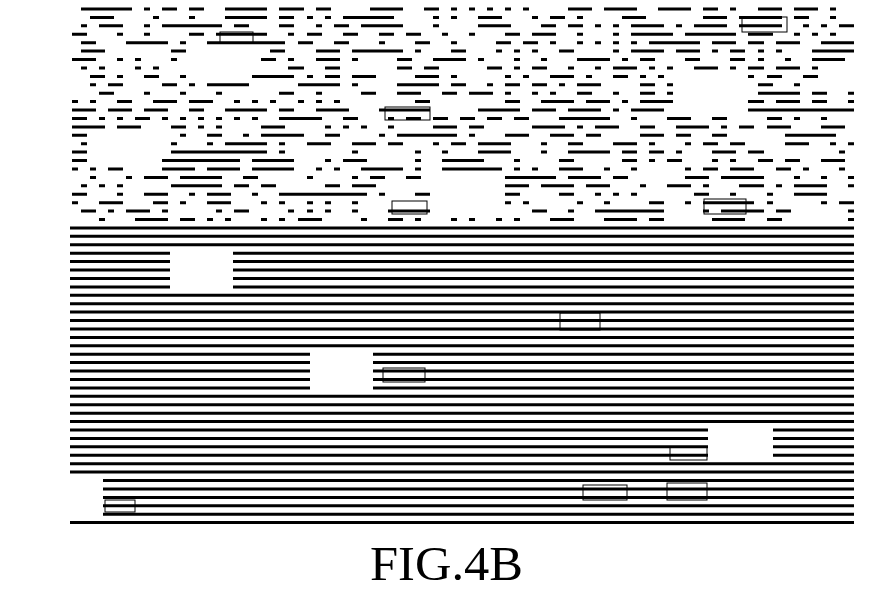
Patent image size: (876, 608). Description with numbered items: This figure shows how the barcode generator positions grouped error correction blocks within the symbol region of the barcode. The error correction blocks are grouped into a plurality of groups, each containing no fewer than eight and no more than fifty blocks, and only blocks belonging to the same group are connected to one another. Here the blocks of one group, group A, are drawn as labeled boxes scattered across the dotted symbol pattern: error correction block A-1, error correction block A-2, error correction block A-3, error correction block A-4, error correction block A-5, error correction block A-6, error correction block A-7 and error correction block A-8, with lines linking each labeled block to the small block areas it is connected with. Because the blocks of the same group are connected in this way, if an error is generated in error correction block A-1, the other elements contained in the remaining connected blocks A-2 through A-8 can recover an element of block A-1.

The error correction block A-1 is at (679, 102).
The error correction block A-2 is at (430, 110).
The error correction block A-3 is at (704, 204).
The error correction block A-4 is at (680, 482).
The error correction block A-5 is at (310, 372).
The error correction block A-6 is at (670, 455).
The error correction block A-7 is at (704, 212).
The error correction block A-8 is at (670, 457).